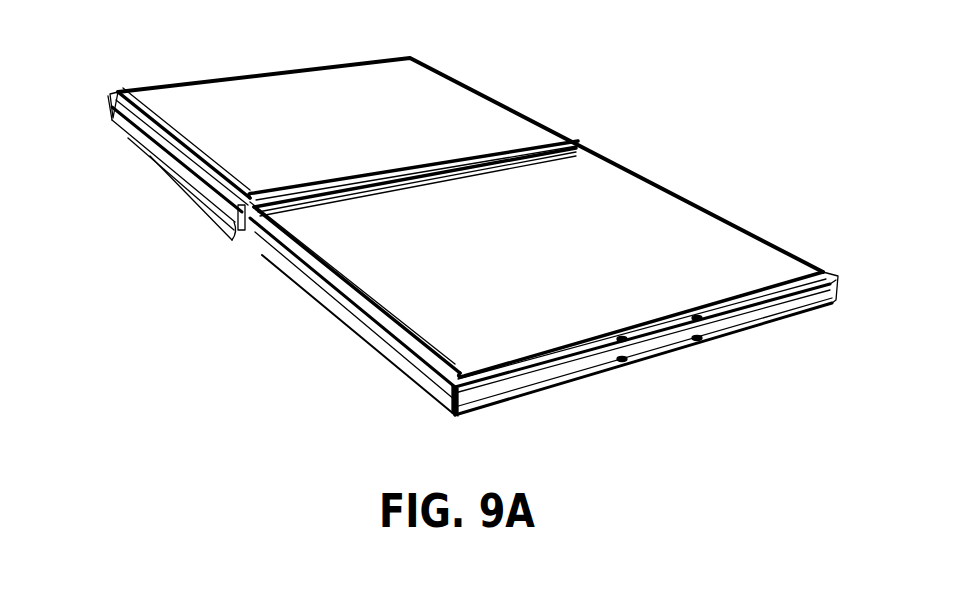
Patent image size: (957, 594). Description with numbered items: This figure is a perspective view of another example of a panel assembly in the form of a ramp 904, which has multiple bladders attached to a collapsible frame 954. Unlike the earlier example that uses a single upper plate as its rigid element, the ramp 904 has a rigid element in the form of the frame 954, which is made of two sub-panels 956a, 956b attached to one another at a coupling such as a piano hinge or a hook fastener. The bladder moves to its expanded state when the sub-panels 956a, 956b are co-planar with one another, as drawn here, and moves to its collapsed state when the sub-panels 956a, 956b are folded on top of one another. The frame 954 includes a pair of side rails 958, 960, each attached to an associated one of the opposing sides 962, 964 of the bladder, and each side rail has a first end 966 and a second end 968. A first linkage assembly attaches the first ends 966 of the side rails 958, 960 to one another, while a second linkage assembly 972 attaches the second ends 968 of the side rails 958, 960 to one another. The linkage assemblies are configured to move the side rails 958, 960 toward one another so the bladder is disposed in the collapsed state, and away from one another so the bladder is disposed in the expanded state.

The ramp 904 is at (219, 52).
The frame 954 is at (108, 102).
The sub-panel 956a is at (150, 165).
The sub-panel 956b is at (447, 413).
The side rail 958 is at (137, 135).
The side rail 960 is at (486, 93).
The opposing side of the bladder 962 is at (180, 157).
The opposing side of the bladder 964 is at (534, 125).
The first end of side rail 966 is at (117, 91).
The second end of side rail 968 is at (455, 413).
The second linkage assembly 972 is at (688, 350).